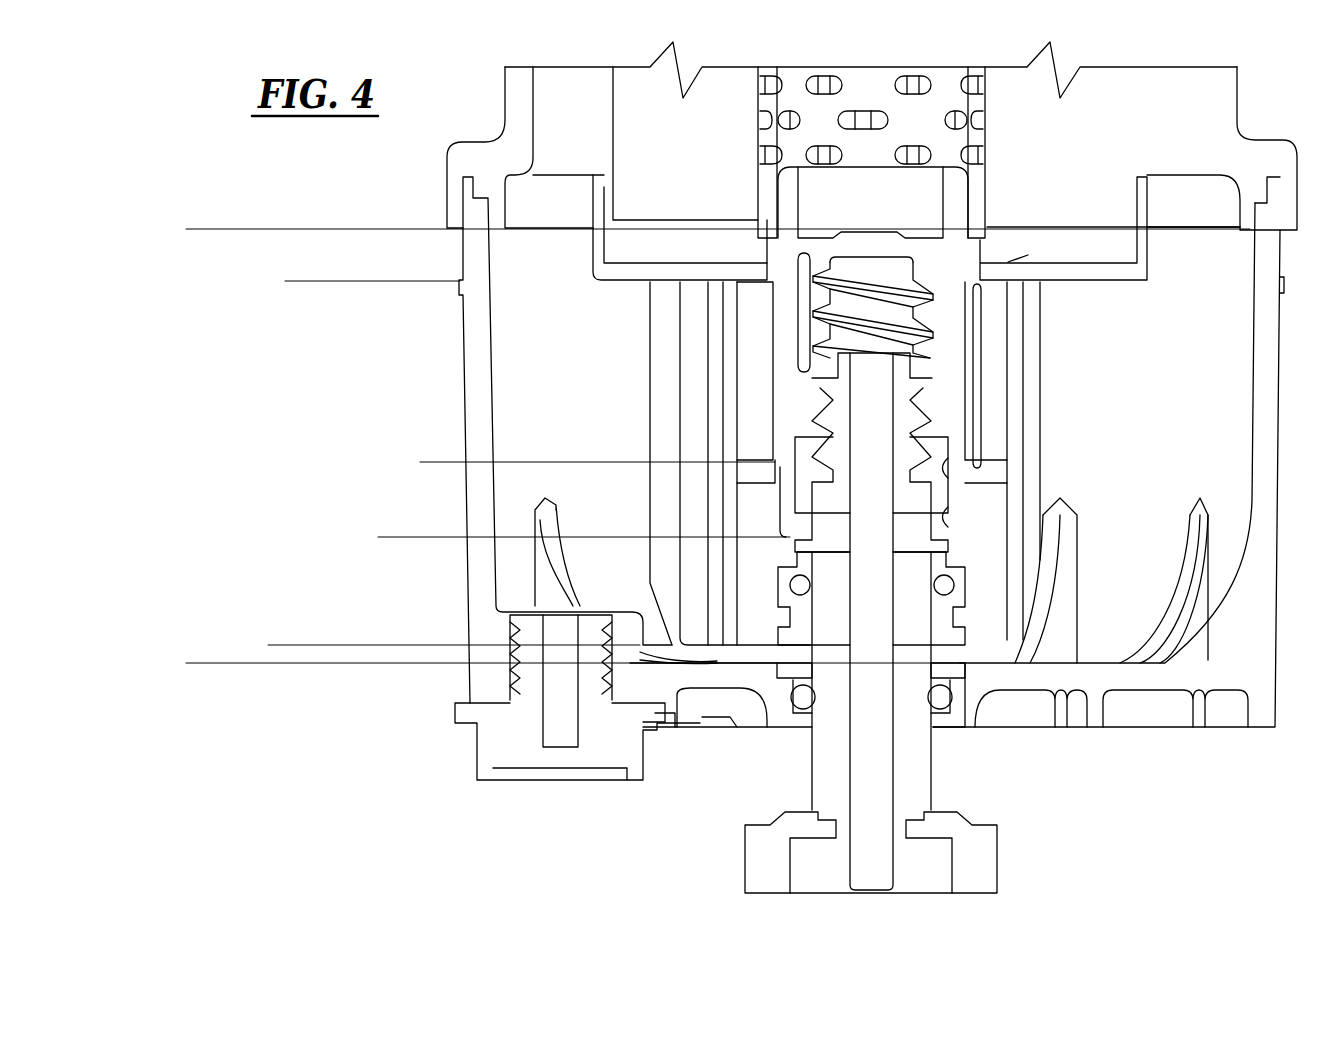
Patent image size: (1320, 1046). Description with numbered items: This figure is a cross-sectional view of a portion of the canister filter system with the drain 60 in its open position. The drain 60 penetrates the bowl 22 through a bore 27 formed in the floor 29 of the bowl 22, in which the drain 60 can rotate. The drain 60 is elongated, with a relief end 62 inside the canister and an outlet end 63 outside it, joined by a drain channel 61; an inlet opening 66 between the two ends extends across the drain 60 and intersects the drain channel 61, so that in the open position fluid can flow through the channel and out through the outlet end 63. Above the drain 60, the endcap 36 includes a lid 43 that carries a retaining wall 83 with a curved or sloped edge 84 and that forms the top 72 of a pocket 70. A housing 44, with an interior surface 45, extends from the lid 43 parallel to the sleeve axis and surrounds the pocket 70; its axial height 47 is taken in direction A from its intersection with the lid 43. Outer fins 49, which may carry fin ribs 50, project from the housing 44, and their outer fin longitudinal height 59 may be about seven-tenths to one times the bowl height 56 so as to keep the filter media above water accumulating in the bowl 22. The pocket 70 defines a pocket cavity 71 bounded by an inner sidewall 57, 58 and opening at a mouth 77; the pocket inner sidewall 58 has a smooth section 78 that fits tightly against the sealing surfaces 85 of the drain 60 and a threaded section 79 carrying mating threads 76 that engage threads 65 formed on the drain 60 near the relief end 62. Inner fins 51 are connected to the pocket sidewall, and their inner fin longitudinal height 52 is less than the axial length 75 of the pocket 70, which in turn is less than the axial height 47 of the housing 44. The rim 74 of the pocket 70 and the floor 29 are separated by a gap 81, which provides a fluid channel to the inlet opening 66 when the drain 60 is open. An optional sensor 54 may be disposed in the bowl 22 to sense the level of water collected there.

The bowl 22 is at (1260, 427).
The bore 27 is at (850, 727).
The floor 29 is at (757, 650).
The endcap 36 is at (1148, 268).
The lid 43 is at (1108, 275).
The housing 44 is at (1013, 450).
The interior surface 45 is at (742, 370).
The axial height 47 is at (299, 645).
The outer fins 49 is at (660, 314).
The fin ribs 50 is at (697, 381).
The inner fins 51 is at (753, 297).
The inner fin longitudinal height 52 is at (432, 281).
The sensor 54 is at (532, 633).
The bowl height 56 is at (220, 229).
The inner sidewall 57 is at (905, 268).
The pocket inner sidewall 58 is at (800, 502).
The outer fin longitudinal height 59 is at (338, 645).
The drain 60 is at (936, 753).
The drain channel 61 is at (880, 692).
The relief end 62 is at (913, 358).
The outlet end 63 is at (868, 872).
The threads 65 is at (810, 387).
The inlet opening 66 is at (933, 542).
The pocket 70 is at (968, 389).
The pocket cavity 71 is at (850, 268).
The top 72 is at (870, 262).
The rim 74 is at (793, 543).
The axial length 75 is at (388, 537).
The mating threads 76 is at (900, 300).
The mouth 77 is at (777, 483).
The smooth section 78 is at (937, 533).
The threaded section 79 is at (795, 313).
The gap 81 is at (757, 536).
The retaining wall 83 is at (788, 188).
The edge 84 is at (920, 180).
The sealing surfaces 85 is at (938, 603).
The direction A is at (135, 545).